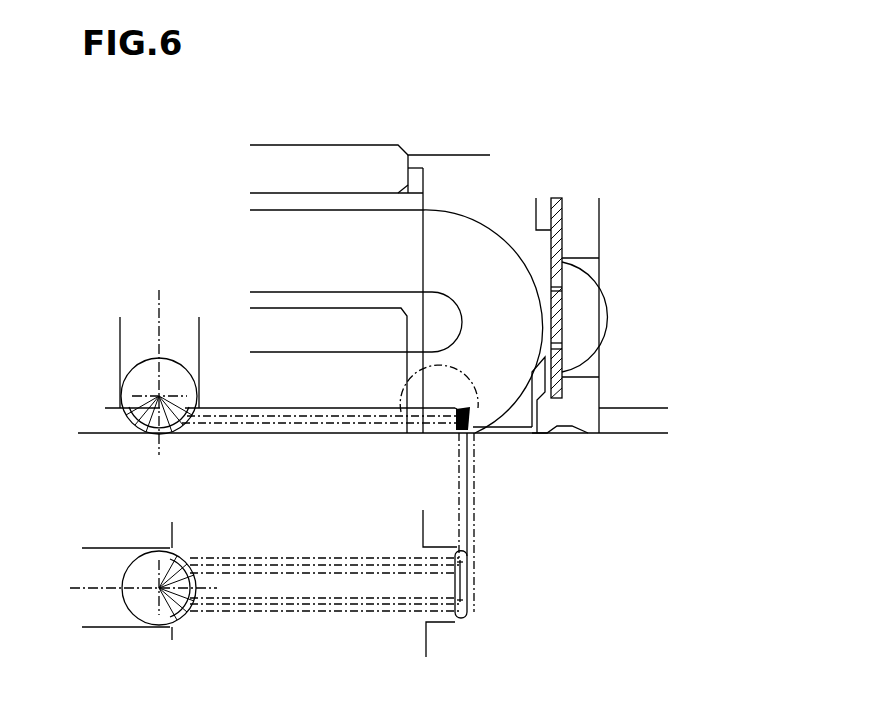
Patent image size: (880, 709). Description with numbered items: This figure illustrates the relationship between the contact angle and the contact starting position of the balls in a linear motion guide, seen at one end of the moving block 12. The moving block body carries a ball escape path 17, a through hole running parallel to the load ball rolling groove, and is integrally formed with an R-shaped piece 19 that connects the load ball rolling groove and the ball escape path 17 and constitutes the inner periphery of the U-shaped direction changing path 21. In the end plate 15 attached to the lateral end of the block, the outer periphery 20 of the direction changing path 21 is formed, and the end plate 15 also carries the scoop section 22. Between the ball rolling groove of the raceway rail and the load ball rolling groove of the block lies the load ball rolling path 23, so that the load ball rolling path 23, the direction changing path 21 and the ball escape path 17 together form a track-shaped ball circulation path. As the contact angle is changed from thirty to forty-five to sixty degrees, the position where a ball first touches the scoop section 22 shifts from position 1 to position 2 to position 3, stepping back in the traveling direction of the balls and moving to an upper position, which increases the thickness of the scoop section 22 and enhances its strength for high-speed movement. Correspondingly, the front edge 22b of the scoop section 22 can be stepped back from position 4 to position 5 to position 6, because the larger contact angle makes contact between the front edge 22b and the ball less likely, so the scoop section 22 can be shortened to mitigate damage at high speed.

The moving block 12 is at (320, 162).
The end plate 15 is at (444, 165).
The ball escape path 17 is at (333, 209).
The R-shaped piece 19 is at (450, 310).
The outer periphery 20 is at (488, 238).
The direction changing path 21 is at (455, 238).
The scoop section 22 is at (468, 408).
The front edge 22b is at (455, 583).
The load ball rolling path 23 is at (305, 426).
The contact starting position 1 is at (455, 555).
The contact starting position 2 is at (470, 555).
The contact starting position 3 is at (473, 560).
The front edge position 4 is at (453, 620).
The front edge position 5 is at (466, 614).
The front edge position 6 is at (472, 618).